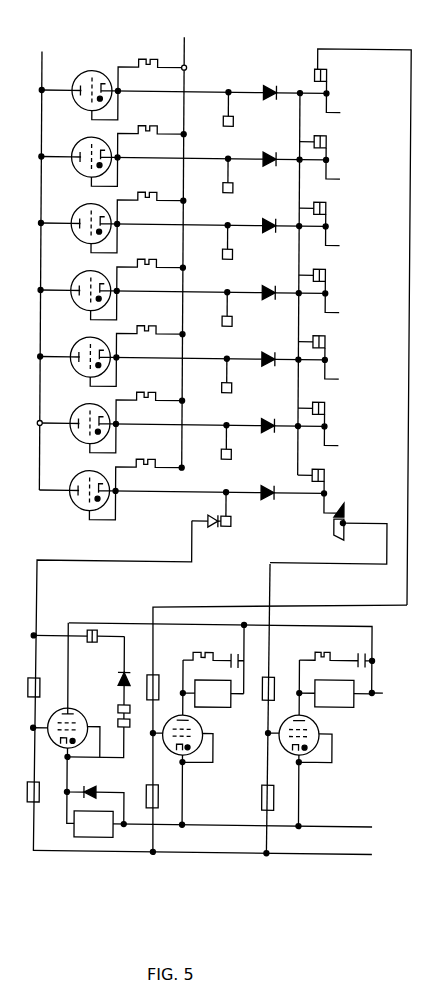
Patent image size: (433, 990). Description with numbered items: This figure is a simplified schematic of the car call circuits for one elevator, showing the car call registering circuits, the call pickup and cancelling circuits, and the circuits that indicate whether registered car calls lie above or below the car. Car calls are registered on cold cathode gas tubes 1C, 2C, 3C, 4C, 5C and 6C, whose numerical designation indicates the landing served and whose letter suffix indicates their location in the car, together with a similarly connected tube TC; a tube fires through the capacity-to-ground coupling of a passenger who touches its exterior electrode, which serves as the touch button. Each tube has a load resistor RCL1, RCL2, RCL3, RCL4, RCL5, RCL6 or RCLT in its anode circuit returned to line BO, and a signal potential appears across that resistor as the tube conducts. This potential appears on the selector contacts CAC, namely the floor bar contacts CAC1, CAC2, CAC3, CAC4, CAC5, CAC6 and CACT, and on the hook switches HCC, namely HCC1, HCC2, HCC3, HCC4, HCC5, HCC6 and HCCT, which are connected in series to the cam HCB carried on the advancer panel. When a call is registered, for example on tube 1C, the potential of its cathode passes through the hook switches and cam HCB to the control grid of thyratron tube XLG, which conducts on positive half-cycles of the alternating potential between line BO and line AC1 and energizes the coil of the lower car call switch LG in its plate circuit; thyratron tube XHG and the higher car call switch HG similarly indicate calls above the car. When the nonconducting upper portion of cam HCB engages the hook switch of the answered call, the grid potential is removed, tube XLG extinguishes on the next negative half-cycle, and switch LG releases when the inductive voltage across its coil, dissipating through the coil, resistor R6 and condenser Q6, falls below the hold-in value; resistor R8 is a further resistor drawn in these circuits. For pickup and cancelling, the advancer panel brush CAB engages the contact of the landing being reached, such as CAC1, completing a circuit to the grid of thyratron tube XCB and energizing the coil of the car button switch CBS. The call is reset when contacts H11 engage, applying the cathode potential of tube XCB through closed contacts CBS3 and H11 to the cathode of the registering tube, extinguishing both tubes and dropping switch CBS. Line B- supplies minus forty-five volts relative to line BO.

The tone/test control tube TC is at (90, 84).
The car call registering tube 6C is at (80, 161).
The car call registering tube 5C is at (79, 227).
The car call registering tube 4C is at (79, 294).
The car call registering tube 3C is at (79, 361).
The car call registering tube 2C is at (78, 427).
The car call registering tube 1C is at (78, 494).
The relay coil for TC RCLT is at (152, 64).
The load resistor RCL6 is at (152, 131).
The load resistor RCL5 is at (151, 197).
The load resistor RCL4 is at (151, 264).
The load resistor RCL3 is at (150, 331).
The load resistor RCL2 is at (150, 397).
The load resistor RCL1 is at (150, 464).
The selector contacts CAC is at (226, 82).
The anode contact for TC CACT is at (230, 120).
The selector floor bar contact CAC6 is at (230, 185).
The selector floor bar contact CAC5 is at (230, 252).
The selector floor bar contact CAC4 is at (229, 319).
The selector floor bar contact CAC3 is at (229, 385).
The selector floor bar contact CAC2 is at (229, 452).
The selector floor bar contact CAC1 is at (247, 516).
The car call pickup and cancelling brush CAB is at (212, 509).
The hook switches HCC is at (354, 316).
The holding contact coil for TC HCCT is at (335, 89).
The hook switch HCC6 is at (340, 155).
The hook switch HCC5 is at (340, 221).
The hook switch HCC4 is at (339, 288).
The hook switch HCC3 is at (339, 355).
The hook switch HCC2 is at (338, 421).
The hook switch HCC1 is at (337, 480).
The highest and lowest car call brush HCB is at (348, 504).
The contacts of field and brake switch H11 is at (88, 646).
The thyratron tube XCB is at (98, 701).
The car button switch contacts CBS3 is at (135, 726).
The car button switch CBS is at (93, 824).
The higher car call switch HG is at (211, 694).
The thyratron gas tube XHG is at (206, 713).
The resistor R8 is at (280, 687).
The lower car call switch LG is at (334, 694).
The thyratron tube XLG is at (331, 709).
The resistor R6 is at (324, 653).
The condenser Q6 is at (362, 653).
The line AC1 is at (392, 686).
The line BO is at (233, 429).
The line B- is at (214, 865).